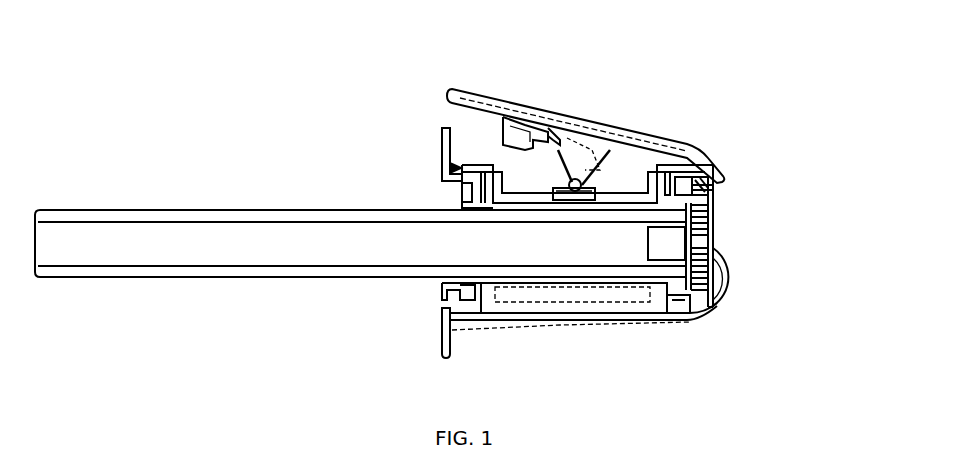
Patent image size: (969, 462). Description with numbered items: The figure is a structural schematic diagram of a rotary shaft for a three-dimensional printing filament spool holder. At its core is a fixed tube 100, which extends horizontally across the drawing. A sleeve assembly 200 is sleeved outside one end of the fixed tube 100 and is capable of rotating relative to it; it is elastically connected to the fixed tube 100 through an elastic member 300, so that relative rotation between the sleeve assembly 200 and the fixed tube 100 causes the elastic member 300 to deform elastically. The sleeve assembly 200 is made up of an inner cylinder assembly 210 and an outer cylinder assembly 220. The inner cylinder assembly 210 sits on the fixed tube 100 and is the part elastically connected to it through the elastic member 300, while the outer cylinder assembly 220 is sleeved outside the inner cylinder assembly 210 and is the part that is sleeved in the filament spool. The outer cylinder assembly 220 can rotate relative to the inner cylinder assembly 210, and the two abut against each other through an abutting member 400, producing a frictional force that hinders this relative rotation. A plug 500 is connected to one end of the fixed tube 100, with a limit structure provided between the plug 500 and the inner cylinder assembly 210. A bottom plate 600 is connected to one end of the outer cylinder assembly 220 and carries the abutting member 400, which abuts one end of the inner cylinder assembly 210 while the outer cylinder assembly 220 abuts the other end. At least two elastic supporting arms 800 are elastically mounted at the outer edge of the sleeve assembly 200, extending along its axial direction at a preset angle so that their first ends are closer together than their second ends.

The fixed tube 100 is at (171, 233).
The sleeve assembly 200 is at (838, 328).
The inner cylinder assembly 210 is at (683, 298).
The outer cylinder assembly 220 is at (657, 326).
The elastic member 300 is at (706, 268).
The abutting member 400 is at (460, 190).
The plug 500 is at (703, 248).
The bottom plate 600 is at (442, 150).
The elastic supporting arm 800 is at (588, 128).